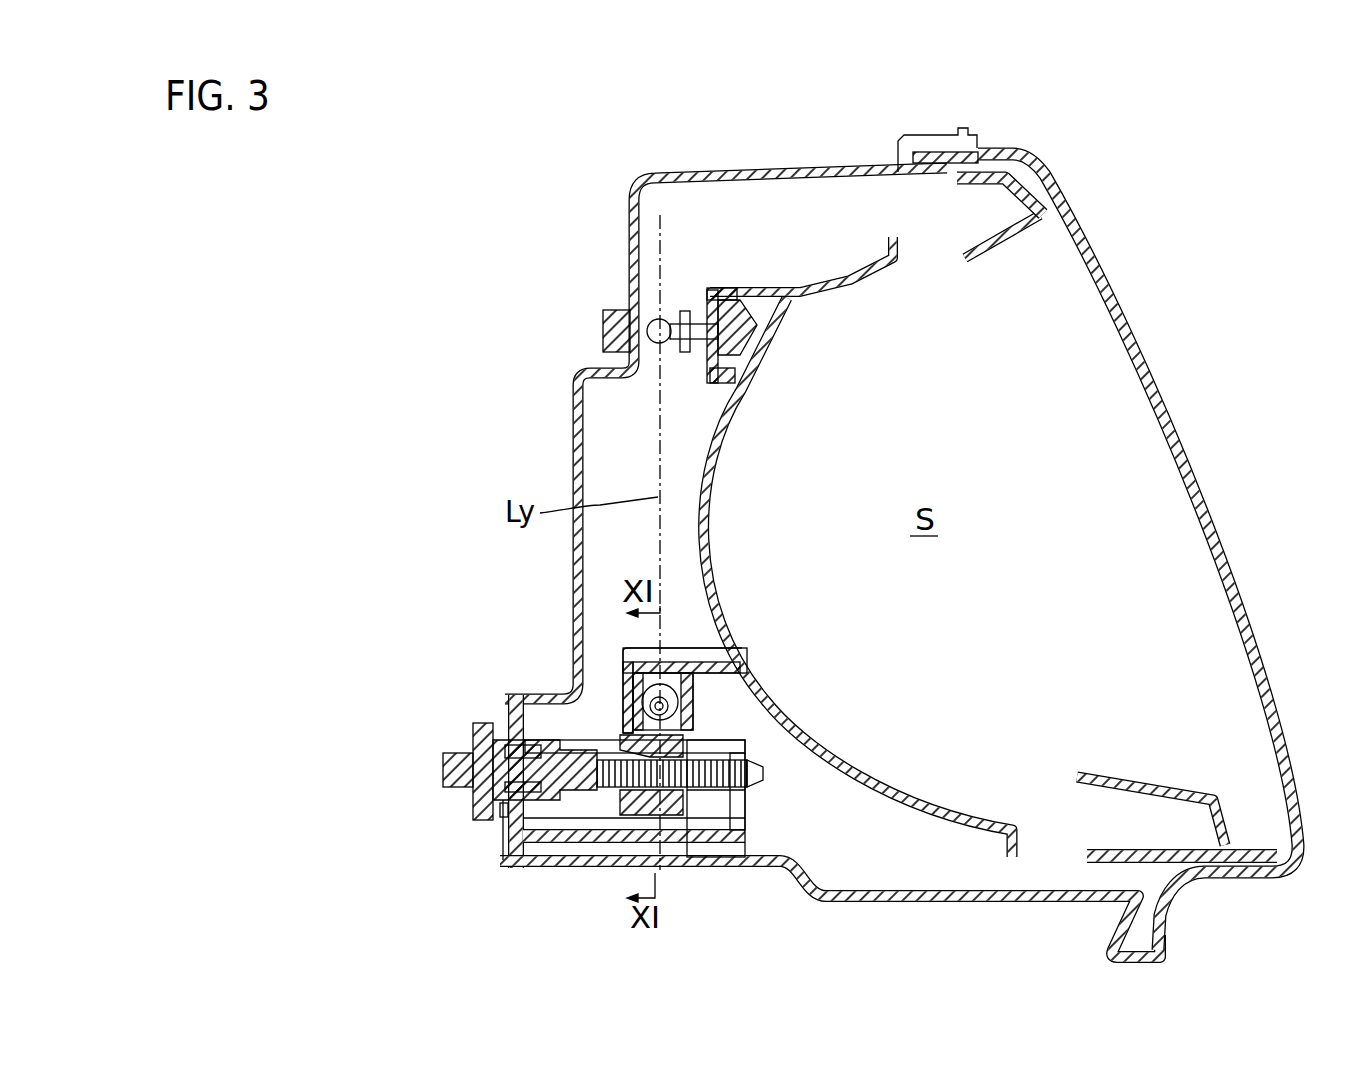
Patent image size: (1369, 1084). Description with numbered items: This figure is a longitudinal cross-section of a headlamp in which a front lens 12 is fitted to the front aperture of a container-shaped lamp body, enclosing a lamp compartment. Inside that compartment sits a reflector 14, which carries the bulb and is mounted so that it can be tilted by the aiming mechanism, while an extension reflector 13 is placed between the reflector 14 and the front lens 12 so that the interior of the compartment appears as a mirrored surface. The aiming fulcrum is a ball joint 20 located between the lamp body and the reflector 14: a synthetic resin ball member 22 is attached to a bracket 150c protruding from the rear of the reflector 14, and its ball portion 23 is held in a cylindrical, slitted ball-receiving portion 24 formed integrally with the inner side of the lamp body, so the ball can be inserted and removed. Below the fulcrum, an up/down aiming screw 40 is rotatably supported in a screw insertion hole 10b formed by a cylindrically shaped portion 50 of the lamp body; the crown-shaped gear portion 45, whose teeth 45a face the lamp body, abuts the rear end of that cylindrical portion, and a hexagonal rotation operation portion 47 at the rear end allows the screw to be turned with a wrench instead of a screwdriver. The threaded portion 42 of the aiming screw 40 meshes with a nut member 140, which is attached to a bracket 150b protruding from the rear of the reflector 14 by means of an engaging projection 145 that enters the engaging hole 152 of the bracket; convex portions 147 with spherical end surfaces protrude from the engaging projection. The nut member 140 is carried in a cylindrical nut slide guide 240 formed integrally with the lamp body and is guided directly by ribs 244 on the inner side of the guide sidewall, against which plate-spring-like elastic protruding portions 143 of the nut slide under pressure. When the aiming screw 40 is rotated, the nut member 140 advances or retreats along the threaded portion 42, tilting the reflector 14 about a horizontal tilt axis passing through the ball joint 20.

The front lens 12 is at (1177, 422).
The extension reflector 13 is at (1008, 248).
The reflector 14 is at (697, 470).
The ball member 22 is at (710, 249).
The ball portion 23 is at (648, 331).
The ball-receiving portion 24 is at (622, 312).
The ball joint 20 is at (561, 320).
The bracket 150c is at (712, 288).
The bracket 150b is at (612, 646).
The engaging hole 152 is at (630, 652).
The engaging projection 145 is at (649, 671).
The convex portion 147 is at (690, 718).
The threaded portion 42 is at (724, 760).
The rotation operation portion 47 is at (442, 772).
The crown-shaped gear portion 45 is at (497, 728).
The cylindrically shaped portion 50 is at (505, 735).
The teeth 45a is at (503, 825).
The screw insertion hole 10b is at (527, 862).
The aiming screw 40 is at (592, 840).
The nut member 140 is at (703, 857).
The elastic protruding portion 143 is at (628, 815).
The nut slide guide 240 is at (752, 797).
The ribs 244 is at (790, 868).